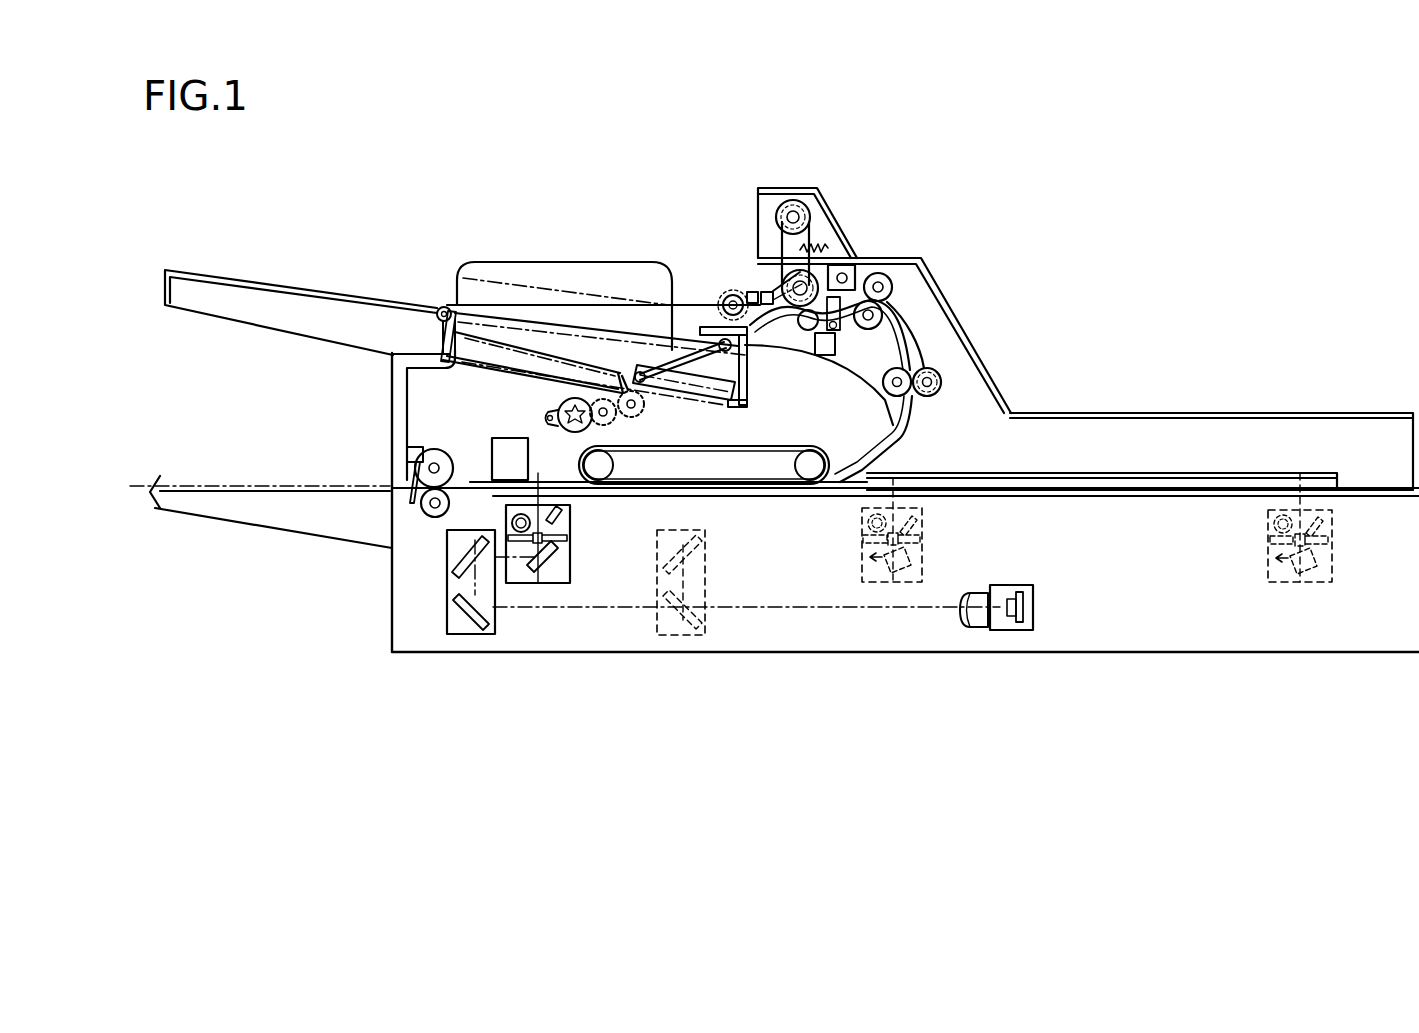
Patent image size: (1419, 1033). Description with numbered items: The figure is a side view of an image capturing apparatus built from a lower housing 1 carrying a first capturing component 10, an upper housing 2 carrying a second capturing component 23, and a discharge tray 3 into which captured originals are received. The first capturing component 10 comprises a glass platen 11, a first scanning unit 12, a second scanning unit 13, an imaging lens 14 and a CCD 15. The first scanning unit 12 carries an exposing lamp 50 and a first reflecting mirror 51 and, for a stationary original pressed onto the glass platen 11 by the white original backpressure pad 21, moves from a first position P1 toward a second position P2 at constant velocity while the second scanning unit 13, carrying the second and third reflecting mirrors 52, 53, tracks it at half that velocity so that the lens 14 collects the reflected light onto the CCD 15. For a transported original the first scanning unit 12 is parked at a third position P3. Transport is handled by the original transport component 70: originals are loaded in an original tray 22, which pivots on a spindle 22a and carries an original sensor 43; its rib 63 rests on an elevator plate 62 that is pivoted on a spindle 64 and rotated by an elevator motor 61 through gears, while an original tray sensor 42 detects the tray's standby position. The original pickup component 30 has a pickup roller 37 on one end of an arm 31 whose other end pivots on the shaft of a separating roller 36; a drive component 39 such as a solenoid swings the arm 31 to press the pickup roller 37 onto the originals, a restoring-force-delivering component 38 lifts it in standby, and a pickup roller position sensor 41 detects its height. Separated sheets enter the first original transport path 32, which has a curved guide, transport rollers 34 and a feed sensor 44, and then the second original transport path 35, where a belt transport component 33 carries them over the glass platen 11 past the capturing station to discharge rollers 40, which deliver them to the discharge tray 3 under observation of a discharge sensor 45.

The lower housing 1 is at (1363, 652).
The upper housing 2 is at (1225, 413).
The discharge tray 3 is at (280, 535).
The first capturing component 10 is at (615, 639).
The glass platen 11 is at (765, 497).
The first scanning unit 12 is at (538, 583).
The second scanning unit 13 is at (443, 618).
The imaging lens 14 is at (968, 620).
The CCD 15 is at (1000, 622).
The original backpressure pad 21 is at (1068, 483).
The original tray 22 is at (497, 327).
The spindle 22a is at (438, 308).
The second capturing component 23 is at (490, 440).
The original pickup component 30 is at (803, 175).
The arm 31 is at (803, 254).
The first original transport path 32 is at (946, 365).
The belt transport component 33 is at (797, 448).
The transport rollers 34 is at (893, 292).
The second original transport path 35 is at (572, 472).
The separating roller 36 is at (783, 285).
The pickup roller 37 is at (813, 198).
The restoring-force-delivering component 38 is at (830, 238).
The drive component 39 is at (857, 265).
The discharge rollers 40 is at (428, 450).
The pickup roller position sensor 41 is at (750, 292).
The original tray sensor 42 is at (935, 393).
The original sensor 43 is at (705, 385).
The feed sensor 44 is at (887, 350).
The discharge sensor 45 is at (412, 452).
The exposing lamp 50 is at (512, 520).
The first reflecting mirror 51 is at (555, 563).
The second reflecting mirror 52 is at (453, 570).
The third reflecting mirror 53 is at (475, 627).
The elevator motor 61 is at (550, 416).
The elevator plate 62 is at (640, 370).
The rib 63 is at (748, 367).
The spindle 64 is at (605, 360).
The original transport component 70 is at (714, 268).
The first position P1 is at (914, 544).
The second position P2 is at (1326, 544).
The third position P3 is at (559, 544).